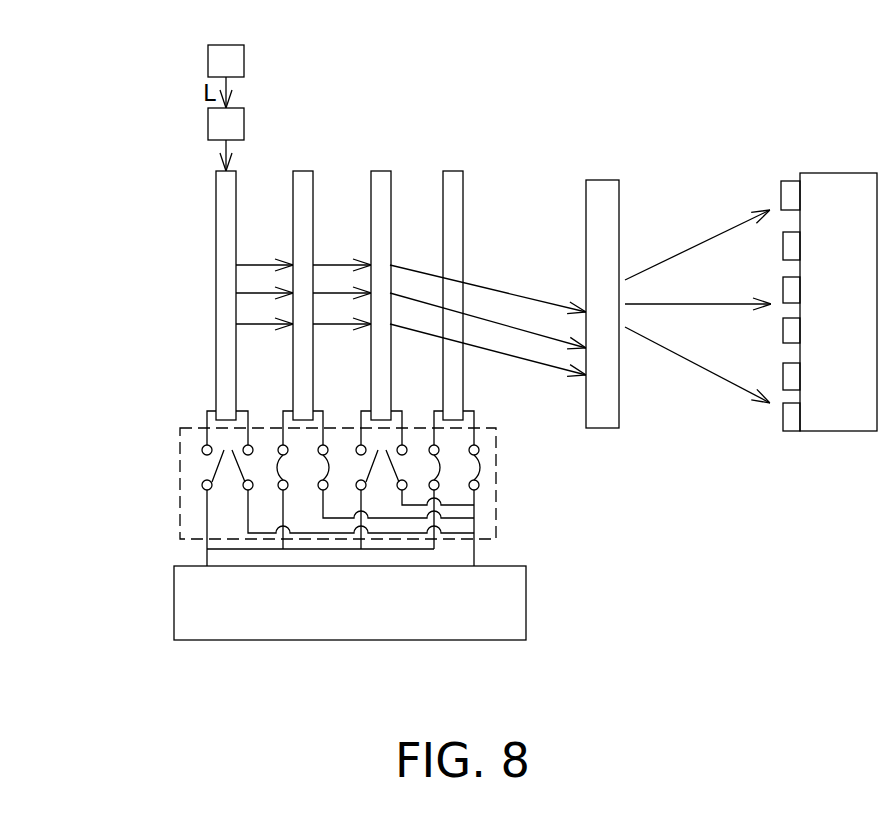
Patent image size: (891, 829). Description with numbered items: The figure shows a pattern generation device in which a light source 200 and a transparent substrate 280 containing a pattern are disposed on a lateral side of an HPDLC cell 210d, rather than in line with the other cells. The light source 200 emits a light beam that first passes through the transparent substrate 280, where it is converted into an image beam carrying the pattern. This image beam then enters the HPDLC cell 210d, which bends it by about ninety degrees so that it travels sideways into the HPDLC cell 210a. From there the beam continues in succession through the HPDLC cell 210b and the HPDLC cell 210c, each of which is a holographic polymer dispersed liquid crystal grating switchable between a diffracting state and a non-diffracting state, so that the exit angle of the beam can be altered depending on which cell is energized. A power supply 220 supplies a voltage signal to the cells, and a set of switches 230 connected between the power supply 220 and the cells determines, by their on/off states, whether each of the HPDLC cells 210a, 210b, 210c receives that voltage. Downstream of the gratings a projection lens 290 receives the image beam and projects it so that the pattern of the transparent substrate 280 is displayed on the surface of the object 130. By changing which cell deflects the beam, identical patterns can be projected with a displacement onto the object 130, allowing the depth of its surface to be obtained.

The light source 200 is at (208, 55).
The transparent substrate 280 is at (208, 118).
The HPDLC cell 210d is at (216, 268).
The HPDLC cell 210a is at (306, 171).
The HPDLC cell 210b is at (383, 171).
The HPDLC cell 210c is at (455, 171).
The switches 230 is at (497, 485).
The power supply 220 is at (527, 604).
The projection lens 290 is at (602, 180).
The object 130 is at (838, 173).